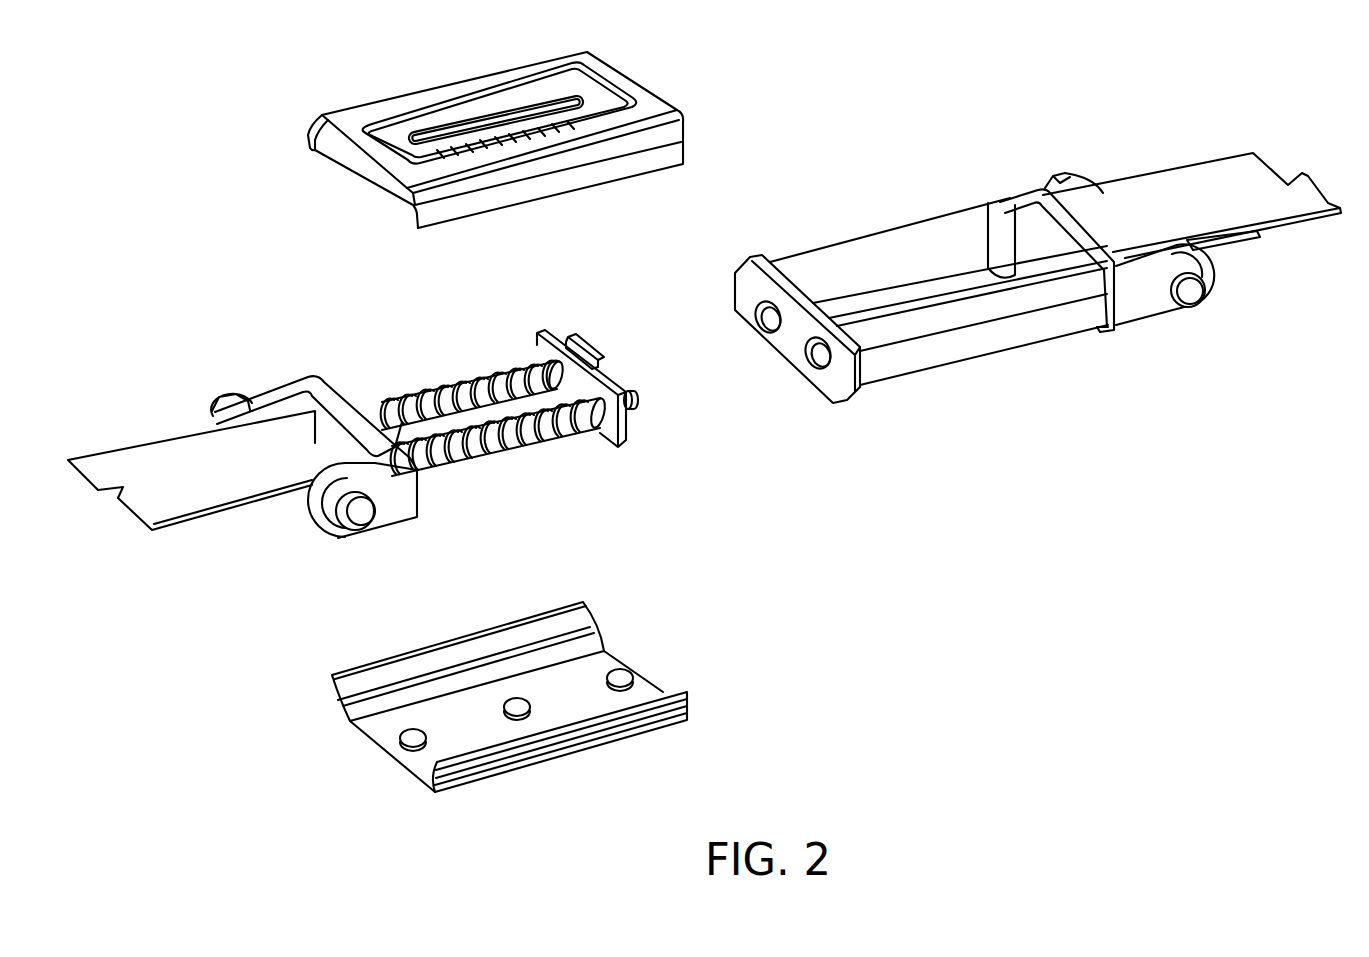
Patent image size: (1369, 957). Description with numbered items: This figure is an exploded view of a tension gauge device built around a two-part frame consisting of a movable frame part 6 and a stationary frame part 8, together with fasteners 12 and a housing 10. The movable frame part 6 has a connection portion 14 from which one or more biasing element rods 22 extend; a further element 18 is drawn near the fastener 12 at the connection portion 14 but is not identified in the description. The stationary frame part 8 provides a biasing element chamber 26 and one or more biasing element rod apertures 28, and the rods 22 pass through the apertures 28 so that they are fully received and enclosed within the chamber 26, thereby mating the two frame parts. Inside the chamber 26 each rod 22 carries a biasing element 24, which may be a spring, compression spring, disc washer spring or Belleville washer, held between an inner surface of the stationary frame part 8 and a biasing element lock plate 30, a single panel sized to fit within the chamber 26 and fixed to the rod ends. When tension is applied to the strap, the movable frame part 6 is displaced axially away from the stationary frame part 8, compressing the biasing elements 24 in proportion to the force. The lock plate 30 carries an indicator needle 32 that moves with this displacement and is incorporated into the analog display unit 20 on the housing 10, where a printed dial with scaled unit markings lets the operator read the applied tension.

The movable frame part 6 is at (520, 425).
The stationary frame part 8 is at (1037, 310).
The housing 10 is at (506, 416).
The fasteners 12 is at (360, 524).
The connection portion 14 is at (268, 365).
The loop of bracket 18 is at (328, 514).
The analog display unit 20 is at (565, 118).
The biasing element rods 22 is at (432, 397).
The biasing element 24 is at (500, 370).
The biasing element chamber 26 is at (920, 247).
The biasing element rod apertures 28 is at (808, 359).
The biasing element lock plate 30 is at (632, 449).
The indicator needle 32 is at (586, 351).